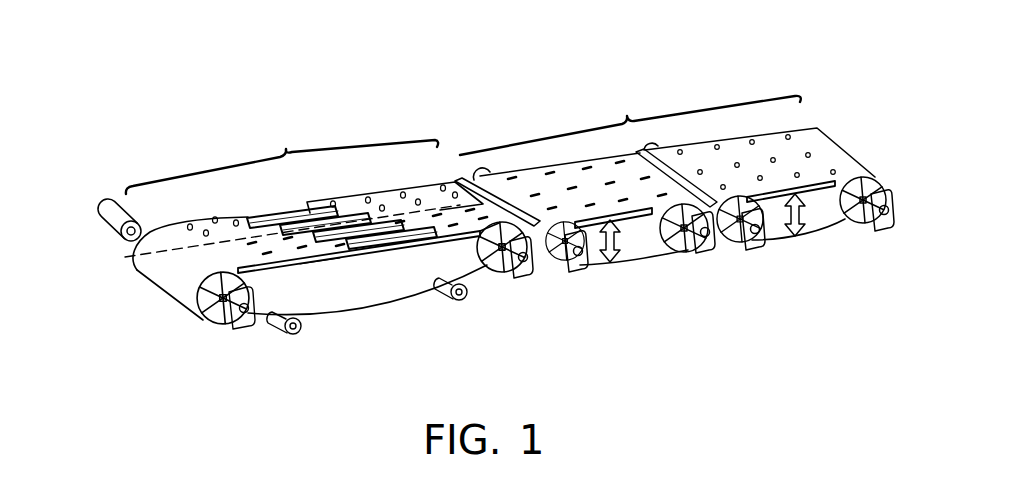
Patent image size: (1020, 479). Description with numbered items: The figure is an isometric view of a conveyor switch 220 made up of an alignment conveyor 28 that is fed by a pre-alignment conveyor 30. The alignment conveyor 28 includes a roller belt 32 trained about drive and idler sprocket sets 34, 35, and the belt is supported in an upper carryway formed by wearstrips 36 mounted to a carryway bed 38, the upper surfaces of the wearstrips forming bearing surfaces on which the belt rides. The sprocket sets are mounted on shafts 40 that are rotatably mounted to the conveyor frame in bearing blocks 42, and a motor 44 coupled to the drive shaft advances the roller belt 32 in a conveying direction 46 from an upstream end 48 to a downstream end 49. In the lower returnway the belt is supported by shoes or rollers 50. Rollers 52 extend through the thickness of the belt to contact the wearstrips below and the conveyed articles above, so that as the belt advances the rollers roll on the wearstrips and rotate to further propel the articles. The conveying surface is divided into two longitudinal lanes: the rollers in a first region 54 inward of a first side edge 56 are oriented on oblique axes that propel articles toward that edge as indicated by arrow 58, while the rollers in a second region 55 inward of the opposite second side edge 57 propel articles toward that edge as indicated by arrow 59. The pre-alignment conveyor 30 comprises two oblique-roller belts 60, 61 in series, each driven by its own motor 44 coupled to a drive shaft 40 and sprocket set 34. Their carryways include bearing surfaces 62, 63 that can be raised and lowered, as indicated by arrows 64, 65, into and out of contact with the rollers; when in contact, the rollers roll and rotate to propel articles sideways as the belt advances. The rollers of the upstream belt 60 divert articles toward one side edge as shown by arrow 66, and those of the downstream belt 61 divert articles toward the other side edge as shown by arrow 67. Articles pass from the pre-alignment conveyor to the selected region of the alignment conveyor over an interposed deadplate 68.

The switch 220 is at (303, 44).
The alignment conveyor 28 is at (283, 152).
The pre-alignment conveyor 30 is at (623, 120).
The roller belt 32 is at (378, 302).
The drive sprocket set 34 is at (218, 324).
The idler sprocket set 35 is at (506, 272).
The wearstrips 36 is at (350, 246).
The carryway bed 38 is at (393, 252).
The shafts 40 is at (139, 238).
The bearing blocks 42 is at (255, 324).
The motor 44 is at (112, 210).
The conveying direction 46 is at (398, 162).
The upstream end 48 is at (458, 182).
The downstream end 49 is at (188, 266).
The shoes or rollers 50 is at (452, 300).
The rollers 52 is at (334, 207).
The first region 54 is at (137, 245).
The second region 55 is at (173, 258).
The first side edge 56 is at (308, 205).
The second side edge 57 is at (317, 258).
The arrow 58 is at (232, 232).
The arrow 59 is at (258, 248).
The upstream oblique-roller belt 60 is at (697, 147).
The downstream oblique-roller belt 61 is at (532, 178).
The bearing surface 62 is at (806, 188).
The bearing surface 63 is at (632, 212).
The arrow 64 is at (799, 216).
The arrow 65 is at (616, 246).
The arrow 66 is at (752, 147).
The arrow 67 is at (578, 200).
The deadplate 68 is at (547, 268).